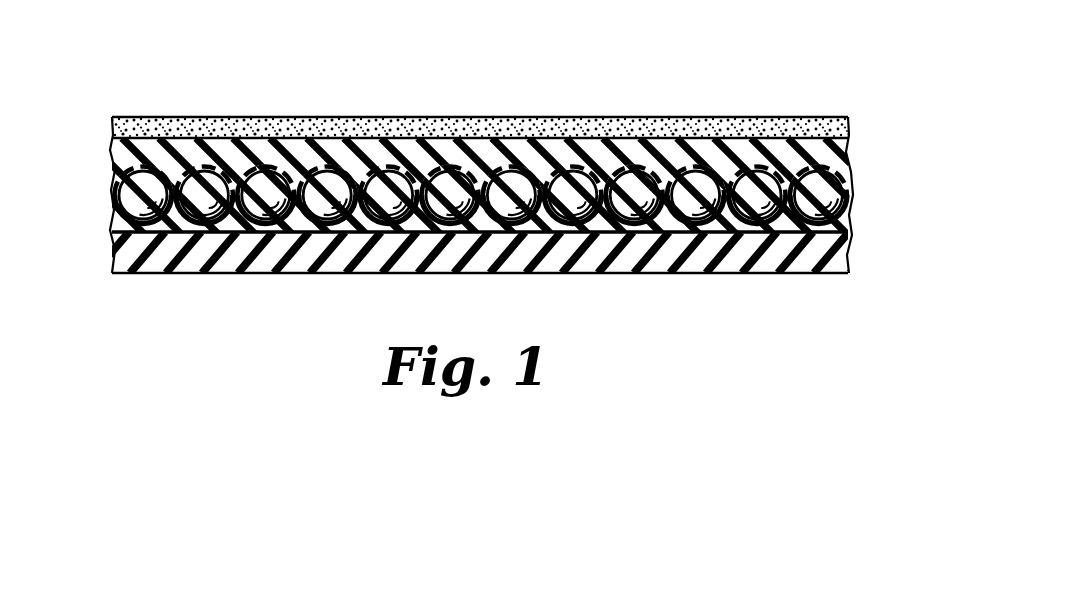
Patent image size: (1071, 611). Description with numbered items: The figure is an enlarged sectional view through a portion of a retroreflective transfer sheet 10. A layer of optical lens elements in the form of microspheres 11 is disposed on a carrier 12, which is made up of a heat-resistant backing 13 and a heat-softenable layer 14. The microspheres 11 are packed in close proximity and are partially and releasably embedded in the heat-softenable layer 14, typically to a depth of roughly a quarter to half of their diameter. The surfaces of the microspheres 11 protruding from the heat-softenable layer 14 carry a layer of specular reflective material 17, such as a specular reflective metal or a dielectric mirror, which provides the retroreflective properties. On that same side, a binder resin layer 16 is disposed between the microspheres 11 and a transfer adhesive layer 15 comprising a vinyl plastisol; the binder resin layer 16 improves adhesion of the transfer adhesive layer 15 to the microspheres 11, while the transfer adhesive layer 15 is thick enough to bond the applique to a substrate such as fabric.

The retroreflective transfer sheet 10 is at (680, 68).
The microspheres 11 is at (378, 182).
The carrier 12 is at (858, 208).
The heat-resistant backing 13 is at (331, 263).
The heat-softenable layer 14 is at (115, 227).
The transfer adhesive layer 15 is at (497, 132).
The binder resin layer 16 is at (117, 153).
The specular reflective material layer 17 is at (853, 177).